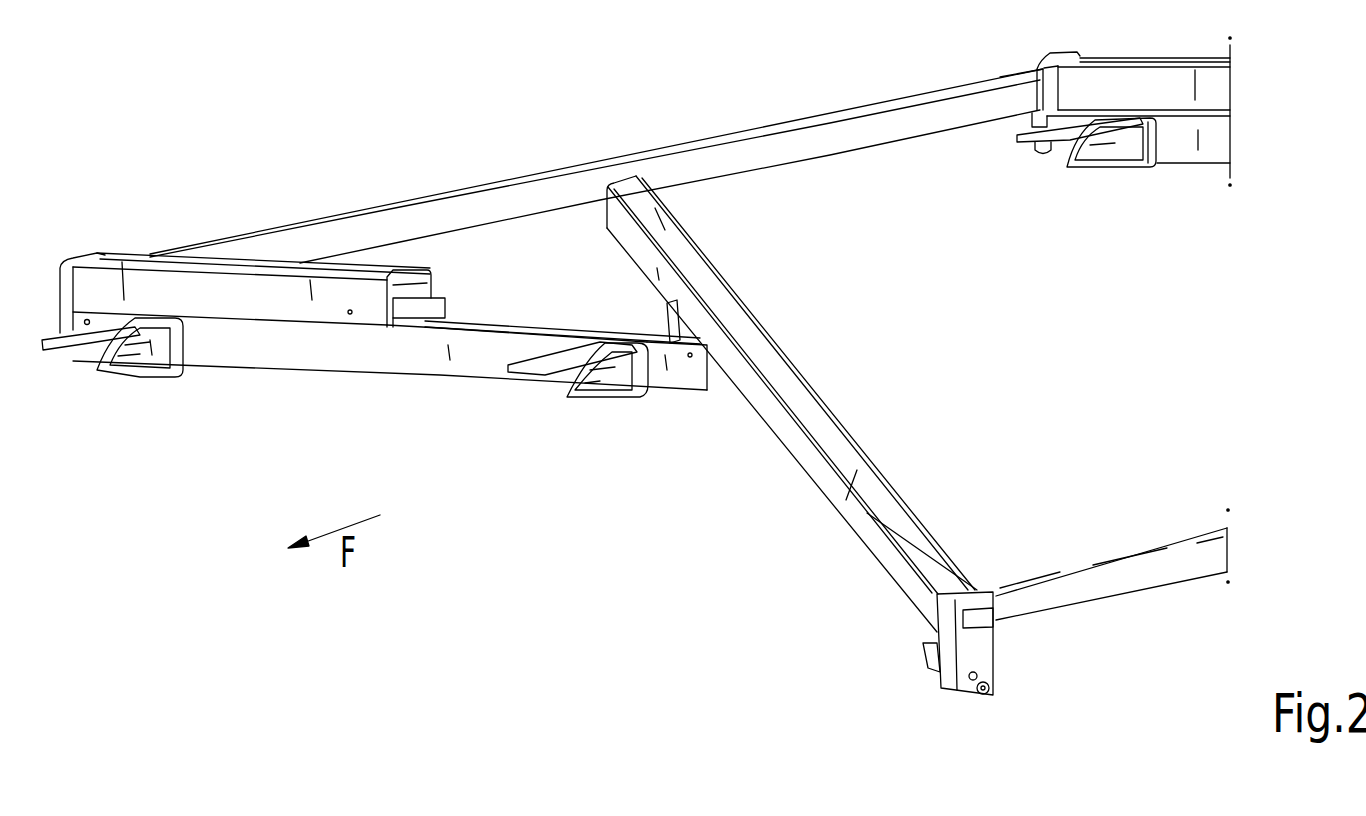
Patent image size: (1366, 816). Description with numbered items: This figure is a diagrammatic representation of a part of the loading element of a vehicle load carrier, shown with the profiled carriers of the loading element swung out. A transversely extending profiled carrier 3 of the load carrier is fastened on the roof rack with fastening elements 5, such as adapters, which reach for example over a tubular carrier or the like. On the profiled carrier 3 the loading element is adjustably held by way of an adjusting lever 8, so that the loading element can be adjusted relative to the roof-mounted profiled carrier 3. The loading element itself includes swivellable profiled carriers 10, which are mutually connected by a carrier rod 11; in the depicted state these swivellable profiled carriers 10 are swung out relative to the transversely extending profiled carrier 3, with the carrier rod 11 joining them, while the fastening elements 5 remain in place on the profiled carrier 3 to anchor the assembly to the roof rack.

The profiled carrier 3 is at (462, 372).
The fastening element 5 is at (600, 385).
The adjusting lever 8 is at (663, 318).
The swivellable profiled carrier 10 is at (268, 287).
The carrier rod 11 is at (785, 148).